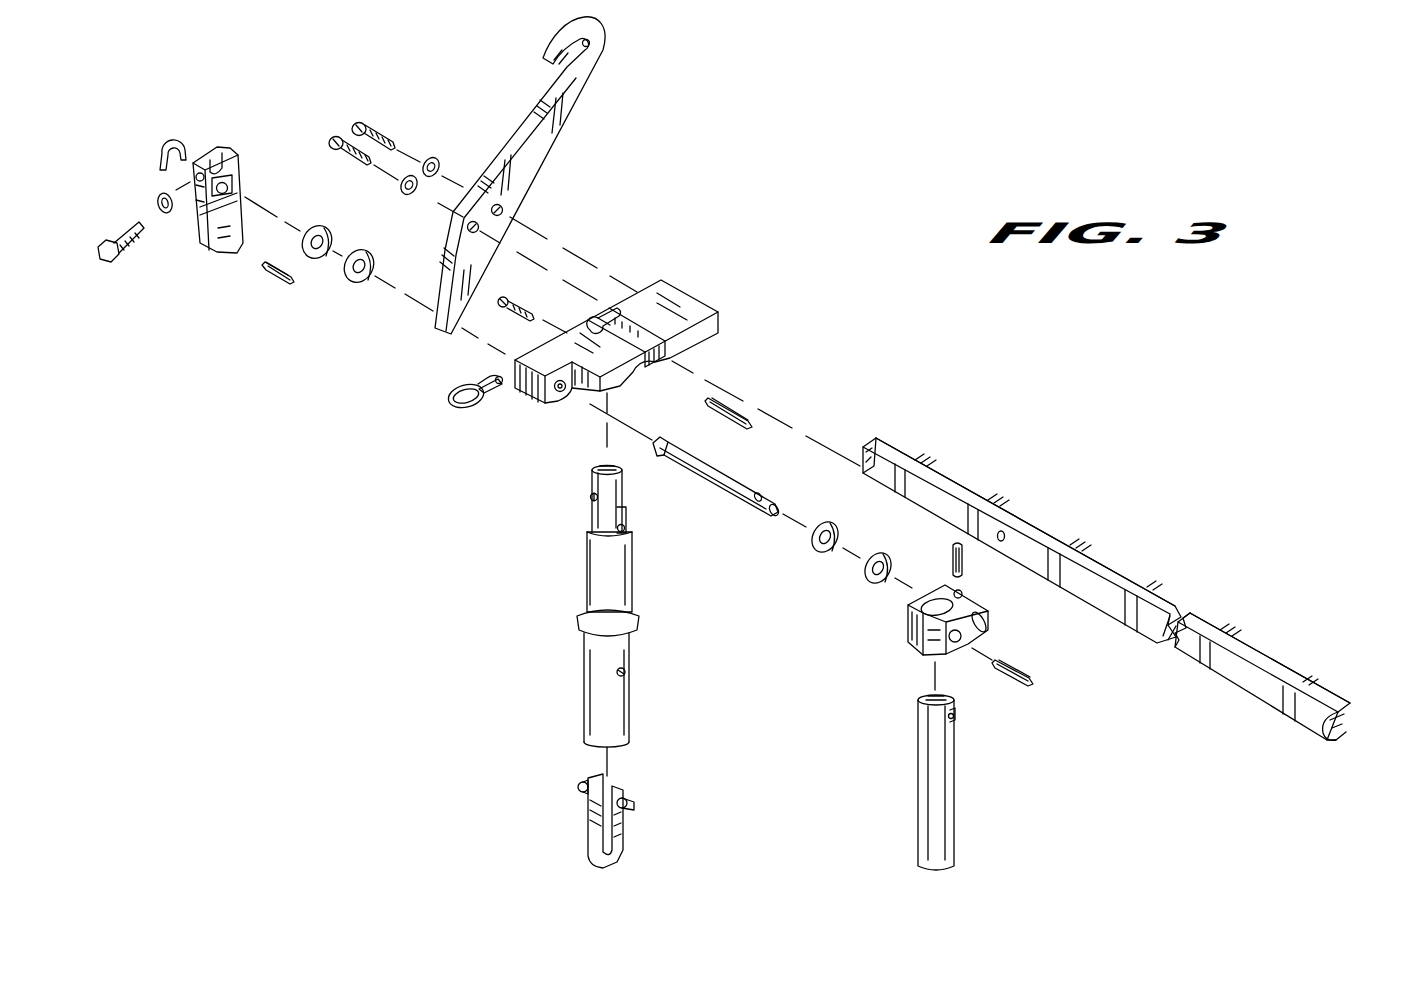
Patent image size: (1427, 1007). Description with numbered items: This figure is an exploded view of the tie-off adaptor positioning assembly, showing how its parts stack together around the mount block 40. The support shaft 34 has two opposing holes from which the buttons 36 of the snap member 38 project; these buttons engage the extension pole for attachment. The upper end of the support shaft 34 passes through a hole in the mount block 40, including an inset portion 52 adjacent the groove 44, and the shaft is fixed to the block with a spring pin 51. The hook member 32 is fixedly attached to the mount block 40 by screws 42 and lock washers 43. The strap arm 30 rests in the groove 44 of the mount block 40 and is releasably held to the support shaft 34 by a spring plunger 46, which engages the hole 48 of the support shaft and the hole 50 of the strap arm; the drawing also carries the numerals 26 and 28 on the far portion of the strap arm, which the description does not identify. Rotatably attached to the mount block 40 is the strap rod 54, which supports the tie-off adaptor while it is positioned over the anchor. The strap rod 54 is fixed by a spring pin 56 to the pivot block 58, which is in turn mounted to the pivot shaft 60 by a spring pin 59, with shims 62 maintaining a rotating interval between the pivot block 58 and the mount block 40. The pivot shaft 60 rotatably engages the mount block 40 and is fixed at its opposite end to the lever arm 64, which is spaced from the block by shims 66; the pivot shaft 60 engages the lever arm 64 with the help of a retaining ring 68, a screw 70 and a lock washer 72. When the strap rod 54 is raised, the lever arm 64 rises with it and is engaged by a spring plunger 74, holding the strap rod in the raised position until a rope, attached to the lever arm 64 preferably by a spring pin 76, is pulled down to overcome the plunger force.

The second bar segment 26 is at (1332, 742).
The hook end 28 is at (1343, 706).
The strap arm 30 is at (1022, 533).
The hook member 32 is at (590, 86).
The support shaft 34 is at (631, 715).
The buttons 36 is at (580, 786).
The snap member 38 is at (590, 852).
The mount block 40 is at (642, 314).
The screws 42 is at (332, 136).
The lock washers 43 is at (410, 176).
The groove 44 is at (665, 348).
The spring plunger 46 is at (487, 399).
The hole 48 is at (592, 497).
The hole 50 is at (1003, 530).
The spring pin 51 is at (741, 427).
The inset portion 52 is at (612, 302).
The strap rod 54 is at (956, 806).
The spring pin 56 is at (1031, 674).
The pivot block 58 is at (912, 647).
The spring pin 59 is at (965, 563).
The pivot shaft 60 is at (729, 490).
The shims 62 is at (873, 582).
The lever arm 64 is at (228, 256).
The shims 66 is at (360, 284).
The retaining ring 68 is at (172, 138).
The screw 70 is at (104, 263).
The lock washer 72 is at (165, 213).
The spring plunger 74 is at (500, 306).
The spring pin 76 is at (283, 285).